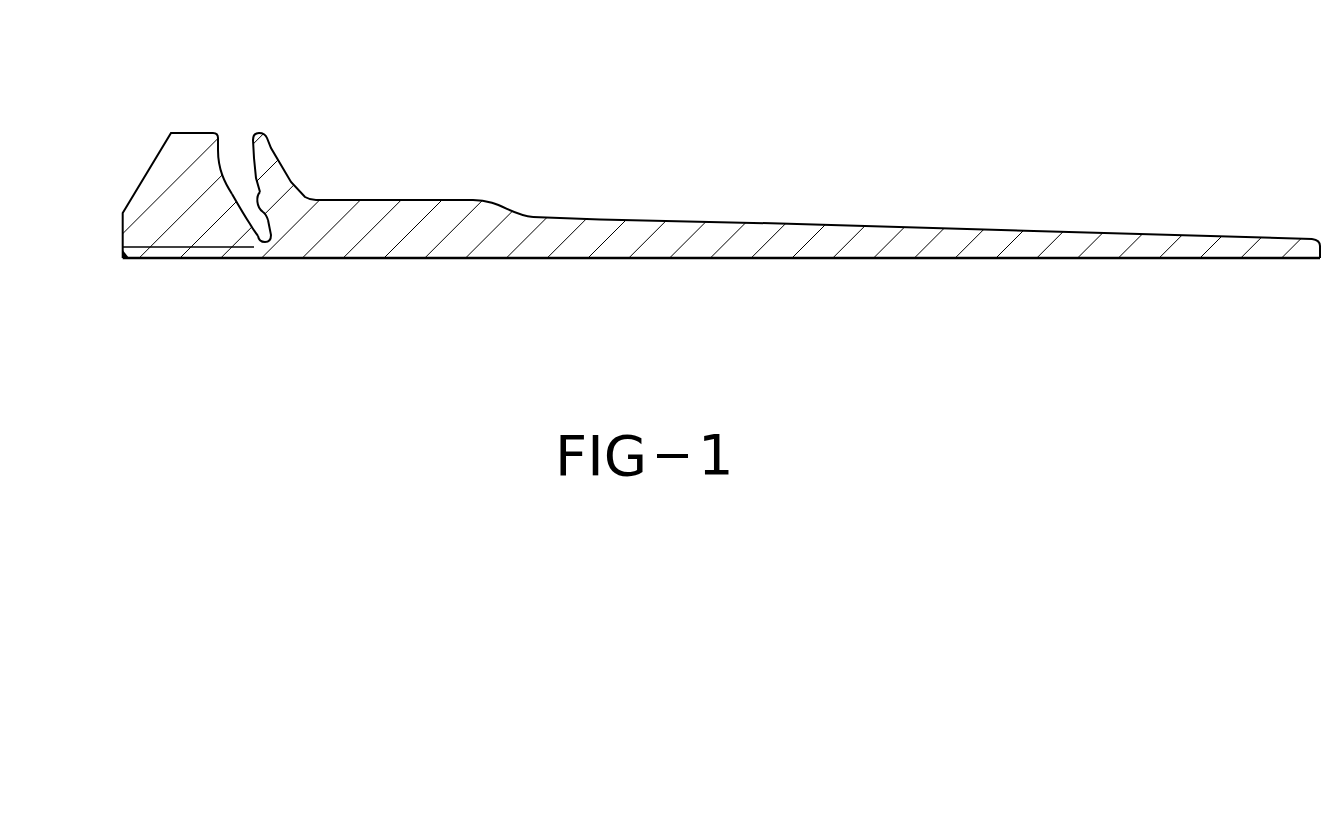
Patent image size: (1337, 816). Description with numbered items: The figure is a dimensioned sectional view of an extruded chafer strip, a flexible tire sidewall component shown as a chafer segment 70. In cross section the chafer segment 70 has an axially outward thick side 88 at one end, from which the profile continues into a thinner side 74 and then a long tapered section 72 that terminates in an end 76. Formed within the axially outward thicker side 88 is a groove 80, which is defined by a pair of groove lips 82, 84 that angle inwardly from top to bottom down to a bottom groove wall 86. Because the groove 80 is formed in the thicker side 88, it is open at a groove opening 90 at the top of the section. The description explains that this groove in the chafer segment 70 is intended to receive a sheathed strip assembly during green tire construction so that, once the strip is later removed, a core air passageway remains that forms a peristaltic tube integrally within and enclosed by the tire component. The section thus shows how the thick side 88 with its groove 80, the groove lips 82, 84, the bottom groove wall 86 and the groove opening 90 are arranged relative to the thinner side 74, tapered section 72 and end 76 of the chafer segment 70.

The chafer segment 70 is at (803, 203).
The tapered section 72 is at (990, 245).
The thinner side 74 is at (398, 212).
The end 76 is at (1320, 247).
The groove 80 is at (238, 187).
The groove lip 82 is at (260, 200).
The groove lip 84 is at (217, 158).
The bottom groove wall 86 is at (257, 237).
The axially outward thick side 88 is at (167, 213).
The groove opening 90 is at (241, 140).